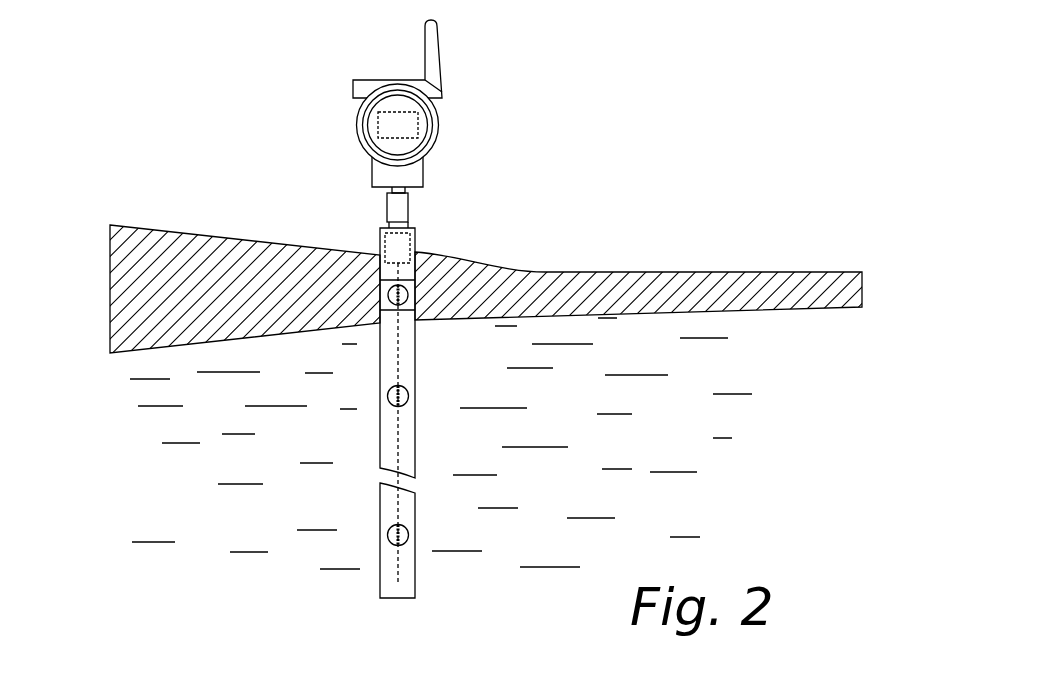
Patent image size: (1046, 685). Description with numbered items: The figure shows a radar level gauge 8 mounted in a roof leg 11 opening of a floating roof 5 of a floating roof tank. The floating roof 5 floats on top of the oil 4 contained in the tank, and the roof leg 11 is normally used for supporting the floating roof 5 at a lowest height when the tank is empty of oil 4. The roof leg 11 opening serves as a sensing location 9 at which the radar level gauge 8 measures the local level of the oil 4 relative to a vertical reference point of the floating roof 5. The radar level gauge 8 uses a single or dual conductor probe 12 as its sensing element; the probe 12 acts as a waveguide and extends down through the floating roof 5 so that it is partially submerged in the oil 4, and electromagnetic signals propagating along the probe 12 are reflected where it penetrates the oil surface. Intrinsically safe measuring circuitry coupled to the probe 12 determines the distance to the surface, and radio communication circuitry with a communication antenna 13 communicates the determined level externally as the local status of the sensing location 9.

The oil 4 is at (142, 390).
The floating roof 5 is at (653, 272).
The radar level gauge 8 is at (397, 125).
The sensing location 9 is at (400, 255).
The roof leg 11 is at (390, 435).
The probe 12 is at (400, 365).
The communication antenna 13 is at (433, 58).